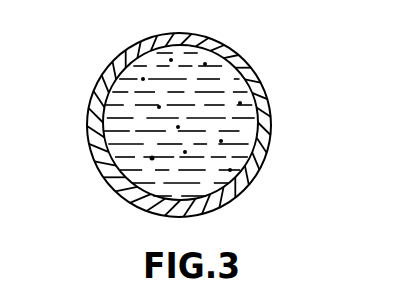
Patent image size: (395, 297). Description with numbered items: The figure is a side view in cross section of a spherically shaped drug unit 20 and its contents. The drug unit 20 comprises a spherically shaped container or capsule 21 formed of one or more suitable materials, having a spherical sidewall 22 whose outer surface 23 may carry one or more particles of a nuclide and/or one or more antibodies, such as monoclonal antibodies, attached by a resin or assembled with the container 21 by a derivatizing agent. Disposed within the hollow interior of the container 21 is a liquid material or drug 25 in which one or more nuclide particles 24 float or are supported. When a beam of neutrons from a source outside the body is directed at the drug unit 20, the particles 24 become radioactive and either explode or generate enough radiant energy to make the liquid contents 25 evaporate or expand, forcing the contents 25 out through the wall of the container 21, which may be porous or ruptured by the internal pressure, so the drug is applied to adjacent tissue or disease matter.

The drug unit 20 is at (108, 45).
The spherically shaped container 21 is at (100, 78).
The spherical sidewall 22 is at (248, 68).
The outer surface 23 is at (88, 140).
The particles 24 is at (152, 158).
The liquid material or drug 25 is at (228, 152).